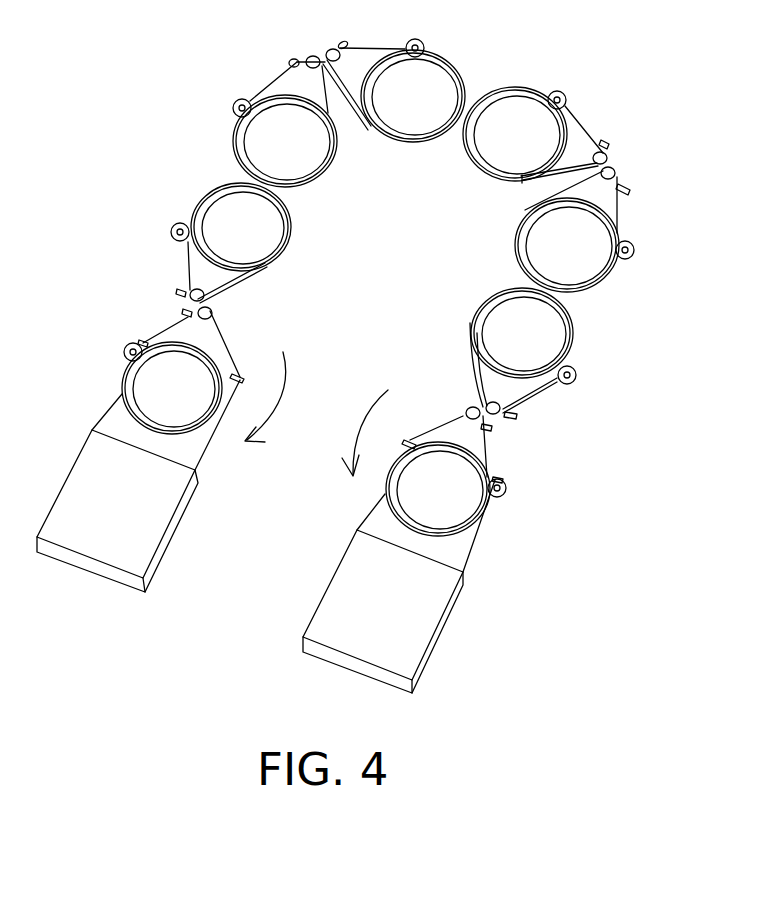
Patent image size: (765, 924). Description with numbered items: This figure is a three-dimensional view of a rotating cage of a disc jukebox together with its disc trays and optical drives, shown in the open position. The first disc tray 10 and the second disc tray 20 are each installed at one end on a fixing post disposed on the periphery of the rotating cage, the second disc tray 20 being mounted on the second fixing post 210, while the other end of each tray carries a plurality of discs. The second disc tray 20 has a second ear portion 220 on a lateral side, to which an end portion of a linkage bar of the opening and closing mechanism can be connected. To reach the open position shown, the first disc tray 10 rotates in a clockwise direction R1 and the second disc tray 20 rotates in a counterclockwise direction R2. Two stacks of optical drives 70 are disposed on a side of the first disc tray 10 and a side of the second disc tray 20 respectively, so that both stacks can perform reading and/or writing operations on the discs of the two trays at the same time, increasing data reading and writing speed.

The first disc tray 10 is at (170, 330).
The second disc tray 20 is at (488, 442).
The second fixing post 210 is at (122, 346).
The second ear portion 220 is at (507, 487).
The optical drives 70 is at (86, 573).
The clockwise direction R1 is at (256, 413).
The counterclockwise direction R2 is at (358, 446).